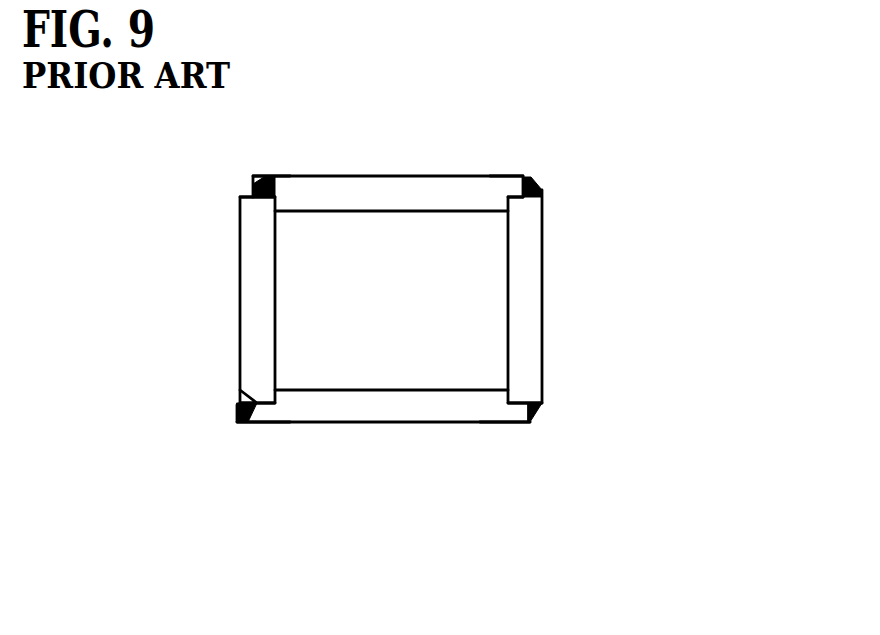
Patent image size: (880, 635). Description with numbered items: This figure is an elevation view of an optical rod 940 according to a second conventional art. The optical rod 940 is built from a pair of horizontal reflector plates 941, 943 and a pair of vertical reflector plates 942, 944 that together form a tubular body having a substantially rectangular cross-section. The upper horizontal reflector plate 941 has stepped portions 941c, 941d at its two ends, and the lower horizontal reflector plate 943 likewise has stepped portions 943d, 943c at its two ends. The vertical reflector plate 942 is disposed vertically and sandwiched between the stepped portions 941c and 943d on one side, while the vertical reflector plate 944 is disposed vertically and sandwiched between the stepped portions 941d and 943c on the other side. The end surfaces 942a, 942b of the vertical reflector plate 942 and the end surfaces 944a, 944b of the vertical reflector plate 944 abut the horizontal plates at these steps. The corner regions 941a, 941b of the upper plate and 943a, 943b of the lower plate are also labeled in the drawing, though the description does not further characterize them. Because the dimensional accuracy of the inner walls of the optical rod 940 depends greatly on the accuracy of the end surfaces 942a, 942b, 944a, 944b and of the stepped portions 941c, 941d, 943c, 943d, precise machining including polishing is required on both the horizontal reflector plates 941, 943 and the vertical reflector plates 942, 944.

The optical rod 940 is at (783, 80).
The horizontal reflector plate 941 is at (335, 177).
The left end portion of upper frame member 941a is at (250, 182).
The right end portion of upper frame member 941b is at (537, 178).
The stepped portion 941c is at (267, 177).
The stepped portion 941d is at (522, 178).
The vertical reflector plate 942 is at (256, 312).
The end surface 942a is at (240, 387).
The end surface 942b is at (270, 197).
The horizontal reflector plate 943 is at (373, 415).
The right end portion of lower frame member 943a is at (527, 423).
The left end portion of lower frame member 943b is at (243, 422).
The stepped portion 943c is at (500, 407).
The stepped portion 943d is at (253, 410).
The vertical reflector plate 944 is at (518, 318).
The end surface 944a is at (520, 200).
The end surface 944b is at (520, 398).